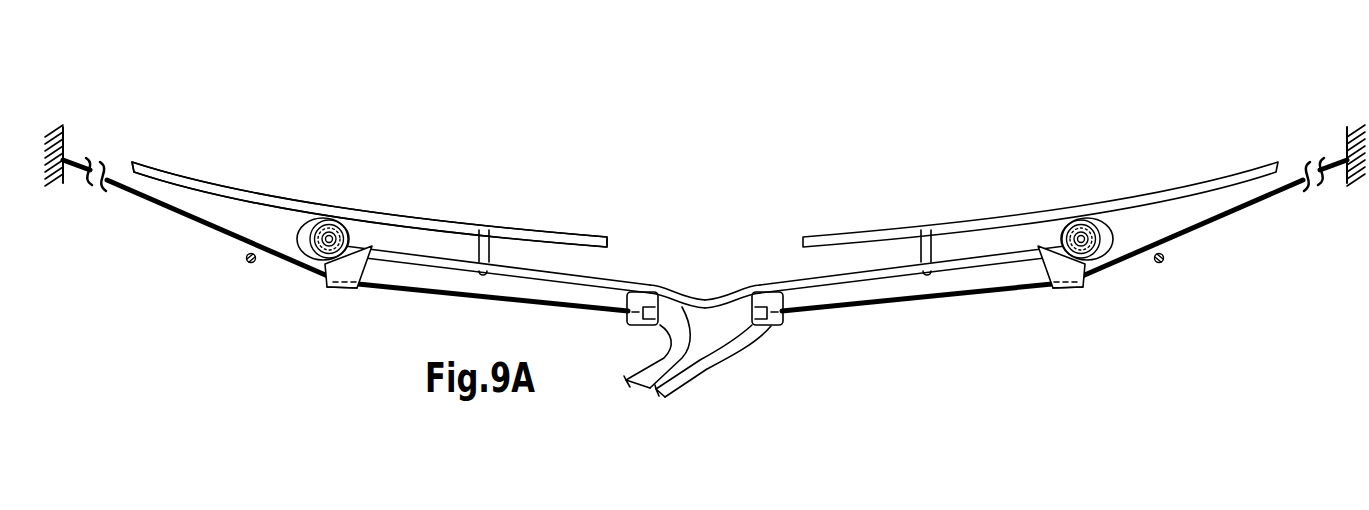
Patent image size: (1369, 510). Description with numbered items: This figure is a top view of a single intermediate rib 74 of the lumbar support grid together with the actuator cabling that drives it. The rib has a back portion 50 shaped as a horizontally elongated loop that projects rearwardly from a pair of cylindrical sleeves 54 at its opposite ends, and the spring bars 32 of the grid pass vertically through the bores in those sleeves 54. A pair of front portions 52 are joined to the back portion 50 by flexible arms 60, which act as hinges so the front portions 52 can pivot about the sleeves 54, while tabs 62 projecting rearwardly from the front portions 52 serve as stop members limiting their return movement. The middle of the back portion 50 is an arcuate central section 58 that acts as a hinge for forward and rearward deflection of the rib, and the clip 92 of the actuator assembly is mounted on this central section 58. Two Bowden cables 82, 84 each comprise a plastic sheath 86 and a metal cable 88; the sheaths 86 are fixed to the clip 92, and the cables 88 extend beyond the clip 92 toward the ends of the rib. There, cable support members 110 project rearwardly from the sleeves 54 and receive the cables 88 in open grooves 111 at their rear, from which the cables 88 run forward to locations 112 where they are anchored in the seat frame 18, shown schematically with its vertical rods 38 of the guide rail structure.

The frame 18 is at (66, 139).
The spring bars 32 is at (327, 237).
The vertical rods 38 is at (247, 261).
The back portion 50 is at (853, 300).
The front portions 52 is at (412, 216).
The cylindrical sleeves 54 is at (350, 234).
The arcuate central section 58 is at (722, 298).
The flexible arms 60 is at (300, 236).
The tabs 62 is at (492, 250).
The intermediate rib 74 is at (325, 159).
The Bowden cable 82 is at (634, 390).
The Bowden cable 84 is at (683, 390).
The plastic sheath 86 is at (645, 364).
The metal cable 88 is at (202, 225).
The clip 92 is at (774, 327).
The cable support members 110 is at (350, 289).
The open grooves 111 is at (331, 294).
The locations 112 is at (72, 188).